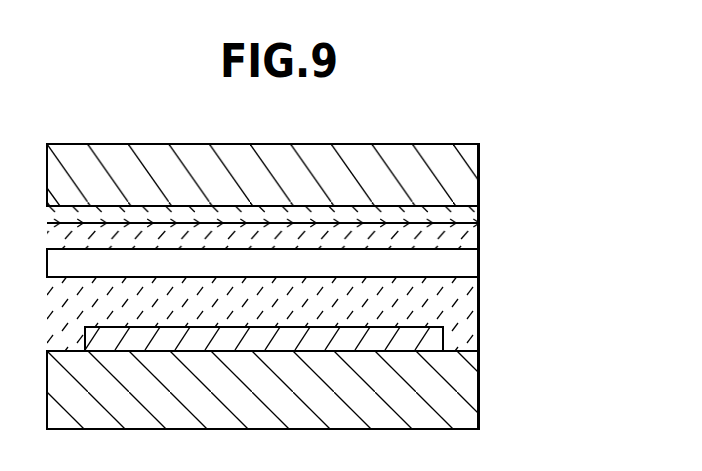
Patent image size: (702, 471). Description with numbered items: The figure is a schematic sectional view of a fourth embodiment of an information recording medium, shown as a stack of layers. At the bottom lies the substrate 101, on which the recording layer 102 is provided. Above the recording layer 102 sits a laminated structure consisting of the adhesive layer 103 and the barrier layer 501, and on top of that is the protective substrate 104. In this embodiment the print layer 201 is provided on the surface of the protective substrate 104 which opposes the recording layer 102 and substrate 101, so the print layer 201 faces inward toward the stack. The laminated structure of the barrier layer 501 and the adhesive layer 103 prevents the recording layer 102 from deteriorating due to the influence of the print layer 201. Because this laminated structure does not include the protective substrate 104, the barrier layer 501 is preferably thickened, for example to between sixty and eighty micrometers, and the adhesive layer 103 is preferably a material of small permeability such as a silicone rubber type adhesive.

The substrate 101 is at (460, 389).
The recording layer 102 is at (443, 337).
The adhesive layer 103 is at (480, 242).
The protective substrate 104 is at (462, 171).
The print layer 201 is at (472, 217).
The barrier layer 501 is at (465, 267).